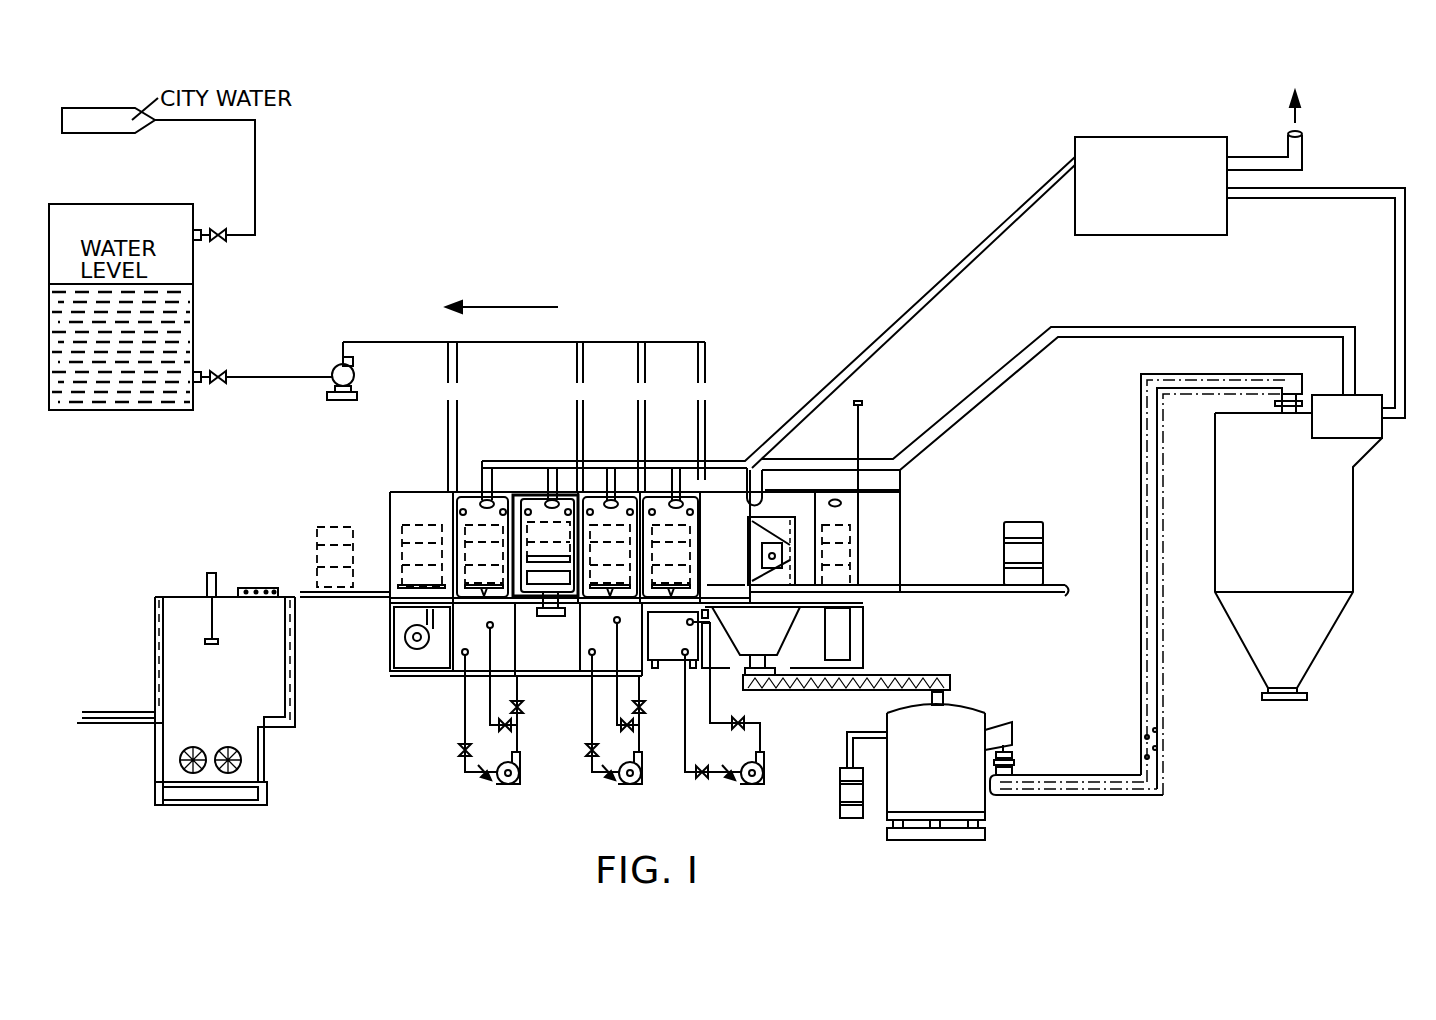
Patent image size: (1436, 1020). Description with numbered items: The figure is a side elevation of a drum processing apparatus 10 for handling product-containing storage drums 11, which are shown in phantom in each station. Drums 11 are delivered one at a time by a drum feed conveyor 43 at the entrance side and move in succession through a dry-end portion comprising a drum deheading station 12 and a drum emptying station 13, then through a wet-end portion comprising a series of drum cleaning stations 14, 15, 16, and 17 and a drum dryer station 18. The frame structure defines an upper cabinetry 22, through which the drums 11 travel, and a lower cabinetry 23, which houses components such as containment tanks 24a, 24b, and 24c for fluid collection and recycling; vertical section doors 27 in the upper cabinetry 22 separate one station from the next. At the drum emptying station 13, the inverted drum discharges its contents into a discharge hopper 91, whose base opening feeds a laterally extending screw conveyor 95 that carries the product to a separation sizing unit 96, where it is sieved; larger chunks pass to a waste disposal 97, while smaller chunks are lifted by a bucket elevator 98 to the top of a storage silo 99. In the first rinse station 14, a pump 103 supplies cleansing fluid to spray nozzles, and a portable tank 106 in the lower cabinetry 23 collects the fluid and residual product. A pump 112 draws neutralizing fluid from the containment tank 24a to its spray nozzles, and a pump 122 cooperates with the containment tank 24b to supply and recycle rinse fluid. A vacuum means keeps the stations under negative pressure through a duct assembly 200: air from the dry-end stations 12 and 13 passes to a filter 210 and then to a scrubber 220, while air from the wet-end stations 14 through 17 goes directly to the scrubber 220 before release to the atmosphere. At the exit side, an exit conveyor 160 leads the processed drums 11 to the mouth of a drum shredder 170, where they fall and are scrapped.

The drum processing apparatus 10 is at (323, 538).
The product-containing storage drum 11 is at (849, 527).
The drum deheading station 12 is at (847, 503).
The drum emptying station 13 is at (777, 500).
The drum cleaning station 14 is at (680, 460).
The drum cleaning station 15 is at (615, 492).
The drum cleaning station 16 is at (555, 467).
The drum cleaning station 17 is at (491, 495).
The drum dryer station 18 is at (438, 492).
The upper cabinetry 22 is at (395, 500).
The lower cabinetry 23 is at (400, 628).
The containment tank 24a is at (627, 655).
The containment tank 24b is at (542, 653).
The containment tank 24c is at (475, 655).
The vertical section door 27 is at (452, 400).
The drum feed conveyor 43 is at (958, 582).
The discharge hopper 91 is at (778, 642).
The screw conveyor 95 is at (815, 690).
The separation sizing unit 96 is at (965, 730).
The waste disposal 97 is at (835, 780).
The bucket elevator 98 is at (1065, 782).
The storage silo 99 is at (1292, 549).
The pump 103 is at (505, 778).
The portable tank 106 is at (700, 649).
The pump 112 is at (628, 778).
The pump 122 is at (745, 778).
The exit conveyor 160 is at (337, 600).
The drum shredder 170 is at (170, 678).
The duct assembly 200 is at (920, 300).
The filter 210 is at (1375, 425).
The scrubber 220 is at (1168, 198).